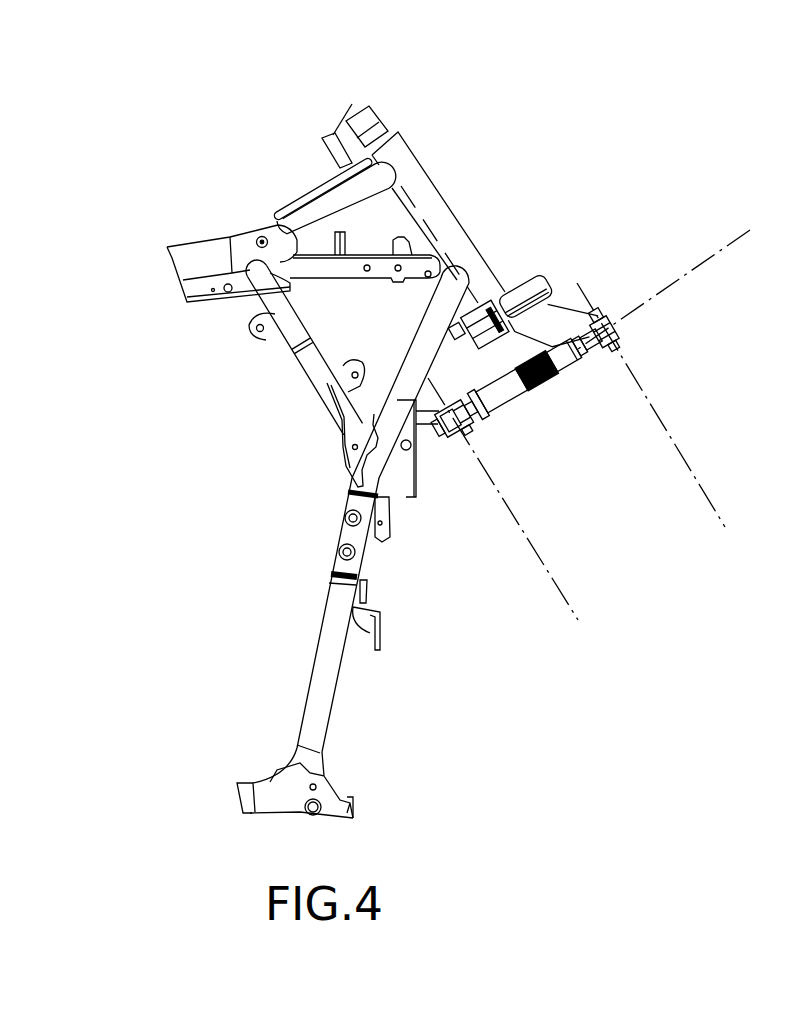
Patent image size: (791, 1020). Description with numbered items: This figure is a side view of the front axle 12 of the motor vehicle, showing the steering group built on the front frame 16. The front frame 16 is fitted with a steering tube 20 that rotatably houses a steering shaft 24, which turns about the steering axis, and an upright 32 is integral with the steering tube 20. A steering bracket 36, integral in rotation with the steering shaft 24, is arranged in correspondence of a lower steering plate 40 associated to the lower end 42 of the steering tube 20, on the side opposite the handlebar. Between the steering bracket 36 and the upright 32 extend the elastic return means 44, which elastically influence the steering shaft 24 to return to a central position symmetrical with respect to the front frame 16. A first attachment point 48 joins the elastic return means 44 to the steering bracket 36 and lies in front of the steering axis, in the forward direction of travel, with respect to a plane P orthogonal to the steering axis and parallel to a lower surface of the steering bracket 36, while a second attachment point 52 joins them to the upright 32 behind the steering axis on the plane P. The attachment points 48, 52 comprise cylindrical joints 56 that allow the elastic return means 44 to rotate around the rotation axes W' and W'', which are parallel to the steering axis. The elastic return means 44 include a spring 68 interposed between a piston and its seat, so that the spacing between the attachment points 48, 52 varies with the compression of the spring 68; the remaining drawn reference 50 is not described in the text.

The front axle 12 is at (283, 99).
The front frame 16 is at (303, 190).
The steering tube 20 is at (417, 158).
The steering shaft 24 is at (366, 106).
The upright 32 is at (397, 393).
The steering bracket 36 is at (553, 323).
The lower steering plate 40 is at (537, 278).
The lower end 42 is at (503, 268).
The elastic return means 44 is at (534, 418).
The first attachment point 48 is at (603, 358).
The linear actuator 50 is at (481, 362).
The second attachment point 52 is at (455, 452).
The cylindrical joints 56 is at (568, 454).
The spring 68 is at (572, 370).
The plane P is at (737, 228).
The rotation axis W' is at (671, 408).
The rotation axis W'' is at (527, 503).